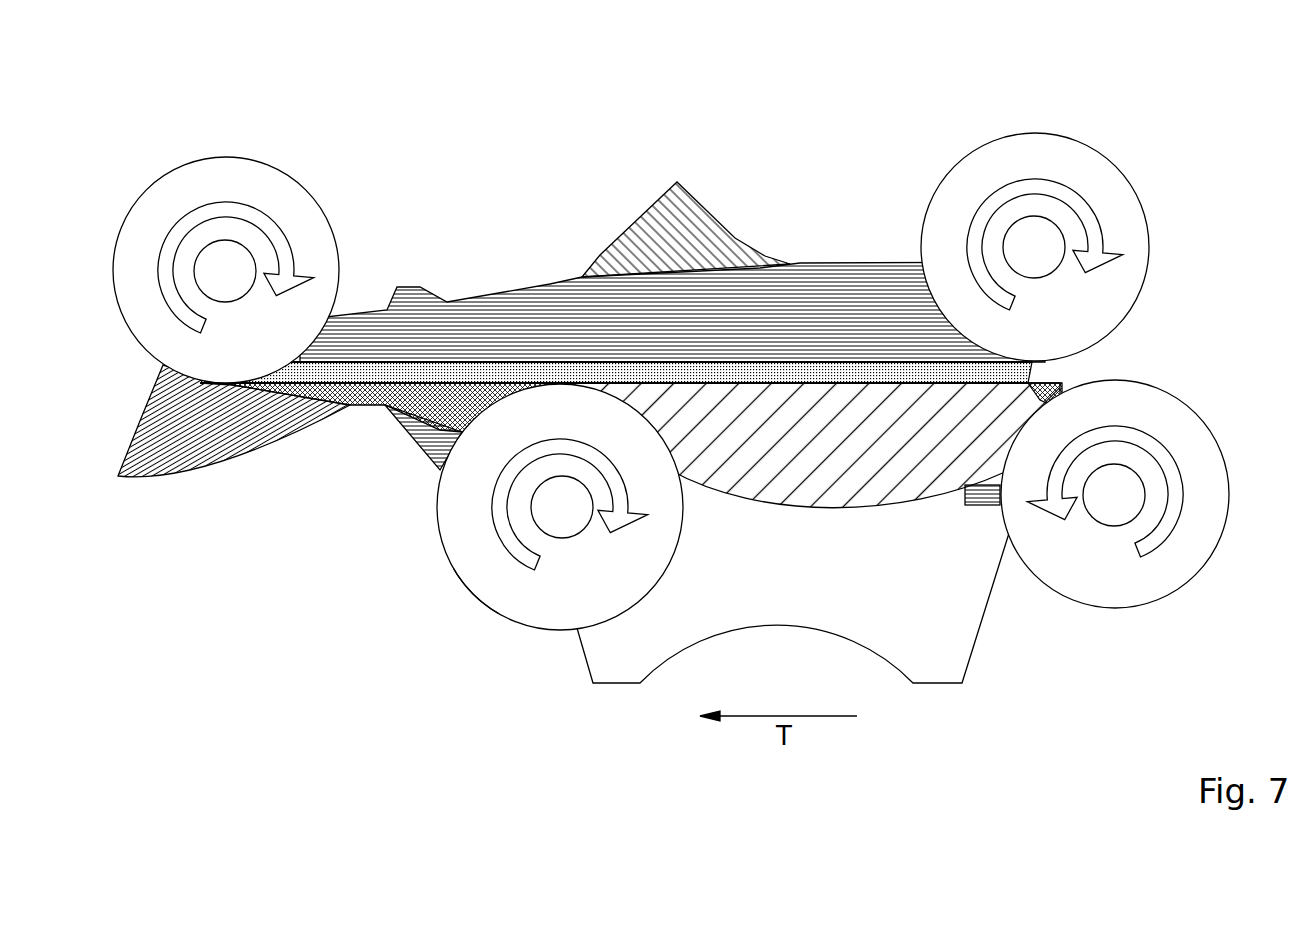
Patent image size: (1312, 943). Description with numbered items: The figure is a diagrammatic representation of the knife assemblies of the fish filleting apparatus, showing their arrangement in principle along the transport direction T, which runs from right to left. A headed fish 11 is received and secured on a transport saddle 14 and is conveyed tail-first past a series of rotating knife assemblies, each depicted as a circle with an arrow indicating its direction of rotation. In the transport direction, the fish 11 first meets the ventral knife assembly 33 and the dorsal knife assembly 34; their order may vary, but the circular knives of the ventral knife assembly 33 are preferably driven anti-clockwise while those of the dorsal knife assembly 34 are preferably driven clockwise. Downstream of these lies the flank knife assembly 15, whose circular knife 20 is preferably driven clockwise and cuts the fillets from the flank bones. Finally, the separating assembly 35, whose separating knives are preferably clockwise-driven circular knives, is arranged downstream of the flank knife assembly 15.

The fish 11 is at (847, 290).
The transport saddle 14 is at (963, 625).
The flank knife assembly 15 is at (462, 608).
The circular knife 20 is at (542, 603).
The ventral knife assembly 33 is at (1177, 370).
The dorsal knife assembly 34 is at (1045, 116).
The separating assembly 35 is at (237, 138).